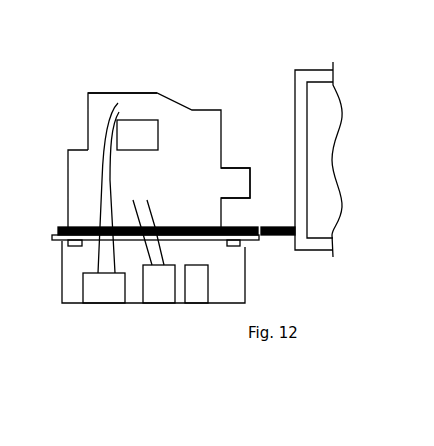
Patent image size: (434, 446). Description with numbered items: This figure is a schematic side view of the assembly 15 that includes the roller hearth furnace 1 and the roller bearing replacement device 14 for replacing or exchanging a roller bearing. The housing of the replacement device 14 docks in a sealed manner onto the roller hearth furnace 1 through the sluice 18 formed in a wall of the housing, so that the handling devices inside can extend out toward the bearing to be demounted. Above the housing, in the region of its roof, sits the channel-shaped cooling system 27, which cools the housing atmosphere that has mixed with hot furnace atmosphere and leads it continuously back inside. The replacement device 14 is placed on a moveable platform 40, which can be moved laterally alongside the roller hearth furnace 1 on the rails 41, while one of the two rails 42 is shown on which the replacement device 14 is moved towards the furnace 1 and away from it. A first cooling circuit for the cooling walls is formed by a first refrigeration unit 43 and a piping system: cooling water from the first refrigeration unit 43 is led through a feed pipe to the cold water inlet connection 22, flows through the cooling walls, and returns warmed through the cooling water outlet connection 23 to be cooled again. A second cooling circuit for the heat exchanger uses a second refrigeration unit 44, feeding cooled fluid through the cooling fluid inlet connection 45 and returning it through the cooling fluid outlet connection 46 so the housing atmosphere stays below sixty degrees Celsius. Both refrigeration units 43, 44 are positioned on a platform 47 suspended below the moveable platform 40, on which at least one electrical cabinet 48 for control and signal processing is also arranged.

The roller hearth furnace 1 is at (222, 17).
The roller bearing replacement device 14 is at (118, 72).
The assembly 15 is at (117, 20).
The sluice 18 is at (242, 167).
The cold water inlet connection 22 is at (133, 200).
The cooling water outlet connection 23 is at (147, 200).
The cooling system 27 is at (150, 82).
The moveable platform 40 is at (52, 237).
The rails 41 is at (78, 247).
The rails 42 is at (58, 228).
The first refrigeration unit 43 is at (165, 290).
The second refrigeration unit 44 is at (102, 291).
The cooling fluid inlet connection 45 is at (118, 103).
The cooling fluid outlet connection 46 is at (119, 112).
The platform 47 is at (135, 303).
The electrical cabinet 48 is at (196, 290).